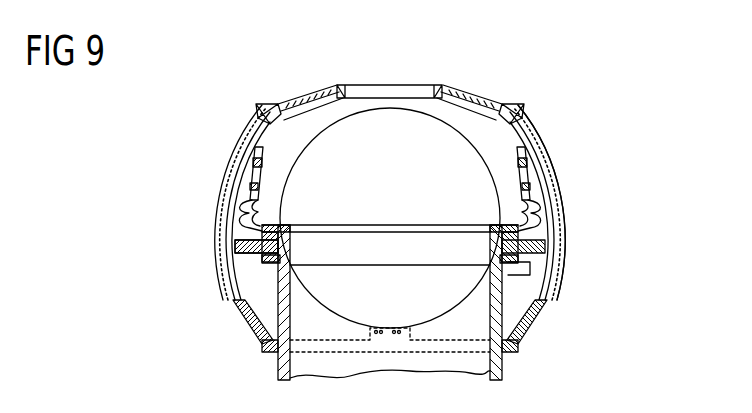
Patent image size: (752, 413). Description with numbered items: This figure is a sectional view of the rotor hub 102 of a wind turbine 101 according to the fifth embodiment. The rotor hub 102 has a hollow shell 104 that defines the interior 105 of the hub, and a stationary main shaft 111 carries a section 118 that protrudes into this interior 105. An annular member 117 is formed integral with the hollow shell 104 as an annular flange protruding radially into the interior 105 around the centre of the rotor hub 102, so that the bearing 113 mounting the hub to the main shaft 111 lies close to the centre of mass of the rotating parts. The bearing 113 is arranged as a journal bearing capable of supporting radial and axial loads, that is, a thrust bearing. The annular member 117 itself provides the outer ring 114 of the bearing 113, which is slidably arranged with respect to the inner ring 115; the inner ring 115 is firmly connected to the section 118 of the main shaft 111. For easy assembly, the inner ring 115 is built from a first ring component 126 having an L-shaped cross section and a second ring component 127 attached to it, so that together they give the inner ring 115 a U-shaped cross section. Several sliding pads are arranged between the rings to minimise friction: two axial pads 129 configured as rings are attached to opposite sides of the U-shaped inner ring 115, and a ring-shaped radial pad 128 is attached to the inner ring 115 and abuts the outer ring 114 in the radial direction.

The wind turbine 101 is at (213, 133).
The rotor hub 102 is at (568, 137).
The hollow shell 104 is at (553, 193).
The interior 105 is at (435, 148).
The main shaft 111 is at (494, 360).
The bearing 113 is at (265, 207).
The outer ring 114 is at (237, 248).
The inner ring 115 is at (518, 273).
The annular member 117 is at (212, 263).
The section of the main shaft 118 is at (494, 316).
The first ring component 126 is at (262, 262).
The second ring component 127 is at (248, 234).
The radial pad 128 is at (487, 254).
The axial pads 129 is at (520, 240).